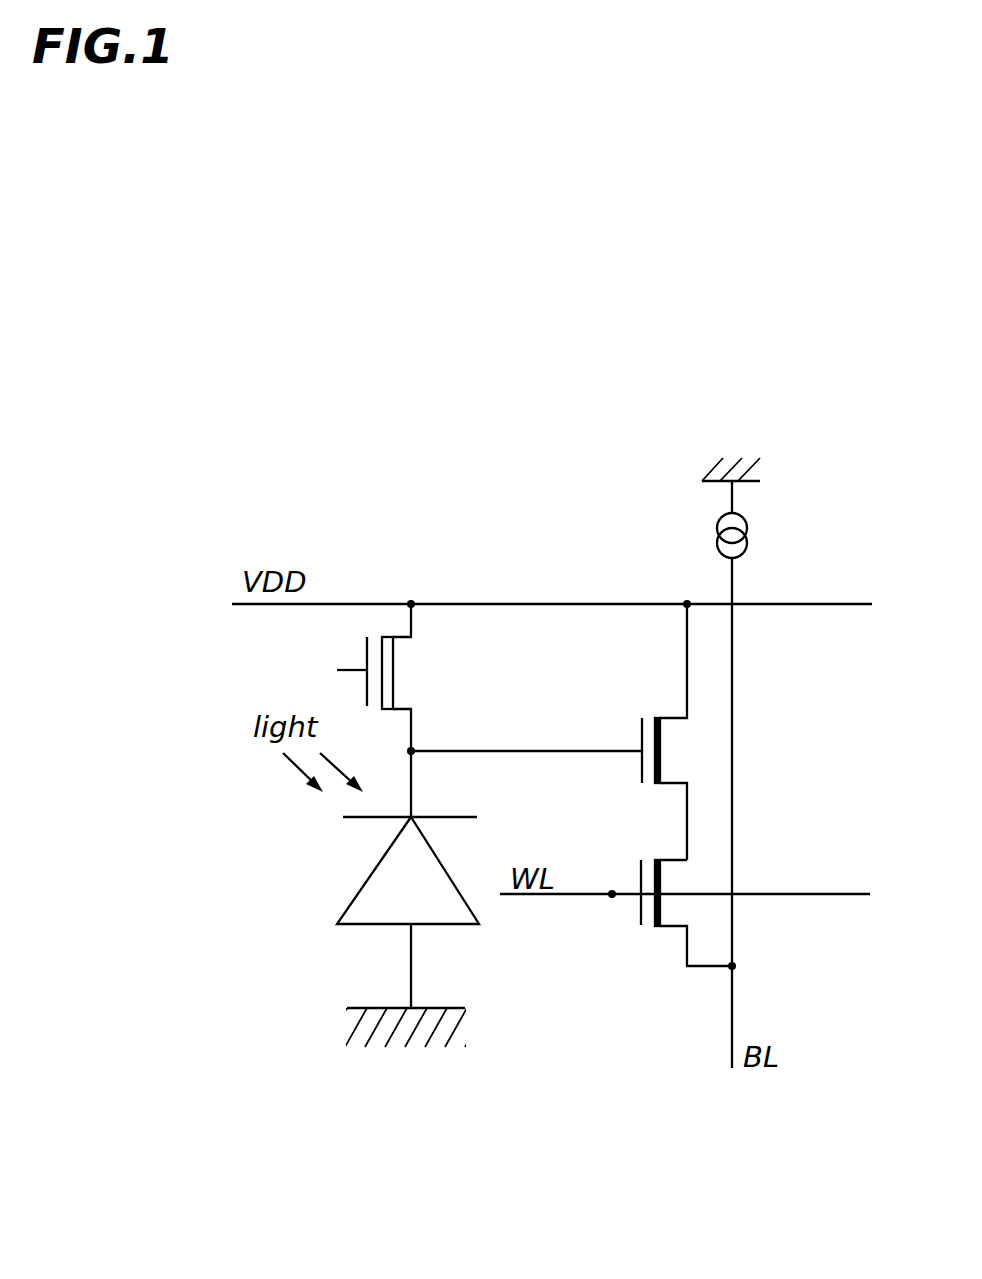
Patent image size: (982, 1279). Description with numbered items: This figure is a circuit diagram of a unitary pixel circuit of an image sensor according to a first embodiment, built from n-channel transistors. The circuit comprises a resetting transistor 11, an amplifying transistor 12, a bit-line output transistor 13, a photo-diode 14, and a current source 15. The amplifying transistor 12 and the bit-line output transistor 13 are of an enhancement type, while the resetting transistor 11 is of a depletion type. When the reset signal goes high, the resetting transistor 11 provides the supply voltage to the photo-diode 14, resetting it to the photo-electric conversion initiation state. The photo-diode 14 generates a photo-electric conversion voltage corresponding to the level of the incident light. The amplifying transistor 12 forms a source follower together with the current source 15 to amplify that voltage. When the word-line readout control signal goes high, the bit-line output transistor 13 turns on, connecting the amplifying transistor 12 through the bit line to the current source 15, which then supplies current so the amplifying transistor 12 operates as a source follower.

The resetting transistor 11 is at (402, 668).
The amplifying transistor 12 is at (672, 753).
The bit-line output transistor 13 is at (667, 878).
The photo-diode 14 is at (353, 893).
The current source 15 is at (747, 528).